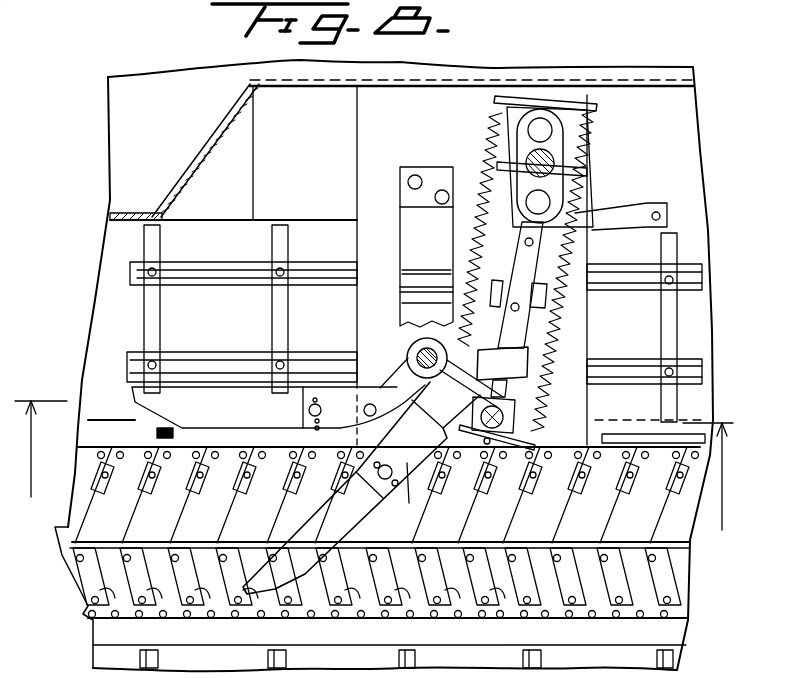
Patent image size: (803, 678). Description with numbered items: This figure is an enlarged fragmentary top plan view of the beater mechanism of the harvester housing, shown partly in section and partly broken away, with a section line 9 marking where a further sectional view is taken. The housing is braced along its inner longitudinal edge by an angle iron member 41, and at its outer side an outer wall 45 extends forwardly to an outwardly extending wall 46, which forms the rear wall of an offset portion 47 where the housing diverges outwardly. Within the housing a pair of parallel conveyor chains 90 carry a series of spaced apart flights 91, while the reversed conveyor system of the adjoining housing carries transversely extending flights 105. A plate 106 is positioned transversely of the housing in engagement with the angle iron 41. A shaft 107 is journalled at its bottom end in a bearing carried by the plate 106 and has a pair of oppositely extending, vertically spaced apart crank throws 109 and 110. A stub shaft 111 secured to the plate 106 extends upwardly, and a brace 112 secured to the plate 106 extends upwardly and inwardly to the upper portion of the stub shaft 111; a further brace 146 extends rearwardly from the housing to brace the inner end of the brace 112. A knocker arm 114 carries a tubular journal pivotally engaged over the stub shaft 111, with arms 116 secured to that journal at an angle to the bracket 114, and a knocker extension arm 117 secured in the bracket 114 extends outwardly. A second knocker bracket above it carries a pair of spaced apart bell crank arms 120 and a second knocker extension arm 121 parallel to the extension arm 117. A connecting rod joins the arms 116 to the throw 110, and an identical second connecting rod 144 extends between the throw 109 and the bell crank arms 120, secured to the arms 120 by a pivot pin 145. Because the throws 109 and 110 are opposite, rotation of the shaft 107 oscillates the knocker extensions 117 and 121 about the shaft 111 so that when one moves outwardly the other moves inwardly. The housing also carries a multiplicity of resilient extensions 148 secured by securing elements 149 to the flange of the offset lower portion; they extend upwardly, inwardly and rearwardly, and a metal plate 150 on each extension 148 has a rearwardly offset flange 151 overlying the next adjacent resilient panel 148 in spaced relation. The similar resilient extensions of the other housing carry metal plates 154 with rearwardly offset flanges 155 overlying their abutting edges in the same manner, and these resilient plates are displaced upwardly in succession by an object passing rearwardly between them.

The section line 9- 9 is at (374, 465).
The angle iron member 41 is at (90, 422).
The outer wall 45 is at (130, 213).
The outwardly extending wall 46 is at (197, 160).
The offset portion of the housing 47 is at (257, 89).
The conveyor chains 90 is at (203, 357).
The flights 91 is at (160, 242).
The flights 105 is at (278, 647).
The plate 106 is at (362, 143).
The shaft 107 is at (554, 168).
The crank throw 109 is at (550, 202).
The crank throw 110 is at (528, 129).
The stub shaft 111 is at (413, 355).
The brace 112 is at (433, 250).
The knocker arm 114 is at (373, 476).
The arms 116 is at (540, 338).
The knocker extension arm 117 is at (338, 535).
The bell crank arms 120 is at (423, 382).
The second knocker extension arm 121 is at (247, 415).
The second connecting rod 144 is at (527, 273).
The pivot pin 145 is at (514, 414).
The brace 146 is at (617, 438).
The resilient extensions 148 is at (243, 521).
The securing elements 149 is at (170, 450).
The metal plate 150 is at (313, 470).
The flange 151 is at (160, 478).
The metal plates 154 is at (187, 620).
The flanges 155 is at (312, 618).